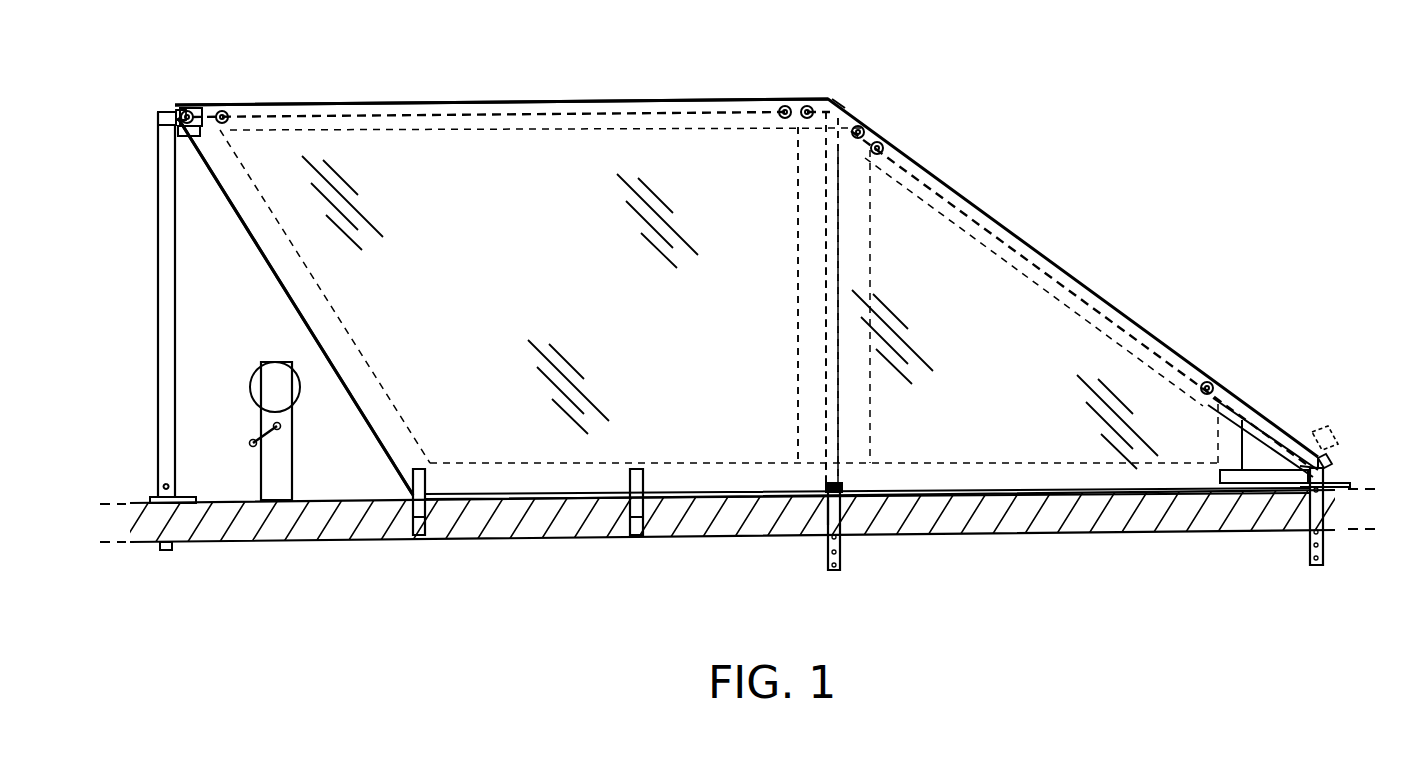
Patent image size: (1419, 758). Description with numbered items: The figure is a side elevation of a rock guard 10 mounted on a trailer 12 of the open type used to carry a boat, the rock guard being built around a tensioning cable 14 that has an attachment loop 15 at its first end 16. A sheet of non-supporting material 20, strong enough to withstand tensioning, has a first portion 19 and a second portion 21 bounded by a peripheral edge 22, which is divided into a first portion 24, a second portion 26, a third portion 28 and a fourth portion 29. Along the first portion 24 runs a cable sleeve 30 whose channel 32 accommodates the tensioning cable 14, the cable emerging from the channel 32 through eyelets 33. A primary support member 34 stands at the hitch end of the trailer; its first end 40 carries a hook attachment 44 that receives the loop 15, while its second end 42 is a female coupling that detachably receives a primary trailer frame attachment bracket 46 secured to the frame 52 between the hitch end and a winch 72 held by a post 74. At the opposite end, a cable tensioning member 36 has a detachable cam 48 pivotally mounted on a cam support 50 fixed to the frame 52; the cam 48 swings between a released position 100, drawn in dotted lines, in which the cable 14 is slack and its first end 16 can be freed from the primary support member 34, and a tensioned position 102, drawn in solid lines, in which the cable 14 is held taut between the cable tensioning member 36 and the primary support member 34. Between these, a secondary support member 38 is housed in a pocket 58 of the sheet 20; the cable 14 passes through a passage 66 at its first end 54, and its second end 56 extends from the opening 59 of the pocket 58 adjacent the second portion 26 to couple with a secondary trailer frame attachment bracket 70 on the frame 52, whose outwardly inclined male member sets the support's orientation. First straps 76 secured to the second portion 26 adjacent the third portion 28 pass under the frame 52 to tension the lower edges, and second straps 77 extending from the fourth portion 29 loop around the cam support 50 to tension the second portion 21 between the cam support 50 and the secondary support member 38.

The rock guard 10 is at (1120, 176).
The trailer 12 is at (290, 575).
The tensioning cable 14 is at (620, 110).
The attachment loop 15 is at (176, 134).
The first end 16 is at (192, 108).
The first portion 19 is at (568, 205).
The sheet of non-supporting material 20 is at (668, 162).
The second portion 21 is at (1000, 330).
The peripheral edge 22 is at (256, 242).
The first portion 24 is at (470, 100).
The second portion 26 is at (700, 497).
The third portion 28 is at (280, 290).
The fourth portion 29 is at (1250, 420).
The cable sleeve 30 is at (300, 112).
The channel 32 is at (365, 114).
The eyelets 33 is at (228, 112).
The primary support member 34 is at (158, 218).
The cable tensioning member 36 is at (1315, 410).
The secondary support member 38 is at (835, 272).
The first end 40 is at (160, 120).
The second end 42 is at (158, 482).
The hook attachment 44 is at (176, 106).
The primary trailer frame attachment bracket 46 is at (168, 548).
The cam 48 is at (1332, 462).
The cam support 50 is at (1325, 520).
The frame 52 is at (490, 537).
The first end 54 is at (838, 108).
The second end 56 is at (828, 486).
The pocket 58 is at (810, 358).
The opening 59 is at (812, 500).
The passage 66 is at (822, 100).
The secondary trailer frame attachment bracket 70 is at (841, 545).
The winch 72 is at (248, 388).
The post 74 is at (293, 442).
The first straps 76 is at (415, 510).
The second straps 77 is at (1240, 462).
The released position 100 is at (1326, 440).
The tensioned position 102 is at (1342, 484).